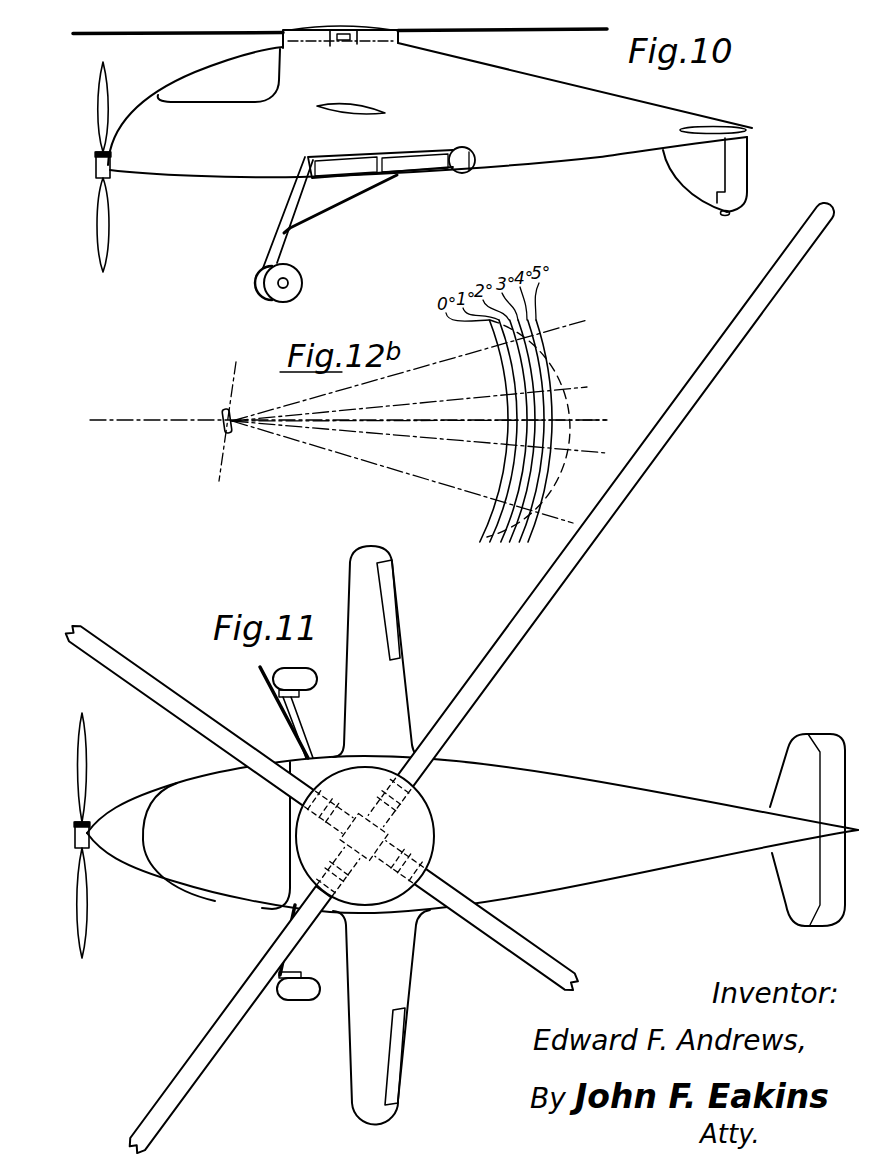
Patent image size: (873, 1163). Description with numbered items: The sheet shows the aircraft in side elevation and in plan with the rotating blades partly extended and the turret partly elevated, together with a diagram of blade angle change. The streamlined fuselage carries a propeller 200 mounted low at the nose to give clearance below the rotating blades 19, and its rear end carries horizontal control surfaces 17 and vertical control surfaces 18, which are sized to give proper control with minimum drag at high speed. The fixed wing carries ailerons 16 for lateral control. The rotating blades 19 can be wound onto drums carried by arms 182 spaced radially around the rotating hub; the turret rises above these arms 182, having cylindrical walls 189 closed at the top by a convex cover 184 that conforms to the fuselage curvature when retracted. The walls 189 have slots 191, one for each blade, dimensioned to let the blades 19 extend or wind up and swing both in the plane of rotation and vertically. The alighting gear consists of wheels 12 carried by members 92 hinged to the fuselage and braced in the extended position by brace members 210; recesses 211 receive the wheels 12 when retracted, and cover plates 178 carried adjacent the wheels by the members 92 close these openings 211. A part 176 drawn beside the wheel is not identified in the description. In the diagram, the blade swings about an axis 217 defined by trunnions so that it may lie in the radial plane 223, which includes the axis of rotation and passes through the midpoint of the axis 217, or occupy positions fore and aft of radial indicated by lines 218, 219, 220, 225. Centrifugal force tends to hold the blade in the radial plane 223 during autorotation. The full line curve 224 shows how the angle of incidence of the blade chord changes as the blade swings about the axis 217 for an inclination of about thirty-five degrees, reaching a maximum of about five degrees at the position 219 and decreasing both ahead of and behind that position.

In FIG. 10, the retractable landing wheels 12 is at (303, 291).
In FIG. 11, the retractable landing wheels 12 is at (326, 655).
In FIG. 11, the ailerons 16 is at (400, 609).
In FIG. 11, the horizontal control surfaces 17 is at (811, 734).
In FIG. 10, the vertical control surfaces 18 is at (748, 162).
In FIG. 10, the blades 19 is at (222, 32).
In FIG. 11, the blades 19 is at (189, 721).
In FIG. 10, the members 92 is at (293, 207).
In FIG. 11, the members 92 is at (297, 727).
In FIG. 10, the wheel fender 176 is at (256, 283).
In FIG. 11, the cover plates 178 is at (268, 681).
In FIG. 11, the arms 182 is at (364, 814).
In FIG. 10, the cover 184 is at (334, 27).
In FIG. 11, the cover 184 is at (418, 821).
In FIG. 10, the walls 189 is at (386, 35).
In FIG. 10, the slots 191 is at (339, 45).
In FIG. 10, the propeller 200 is at (105, 248).
In FIG. 11, the propeller 200 is at (85, 924).
In FIG. 10, the brace members 210 is at (346, 200).
In FIG. 10, the recesses 211 is at (469, 162).
In FIG. 12B, the axis 217 is at (233, 408).
In FIG. 12B, the line 218 is at (563, 501).
In FIG. 12B, the line 219 is at (571, 453).
In FIG. 12B, the line 220 is at (580, 325).
In FIG. 12B, the radial plane 223 is at (602, 418).
In FIG. 12B, the curve 224 is at (542, 372).
In FIG. 12B, the line 225 is at (587, 386).